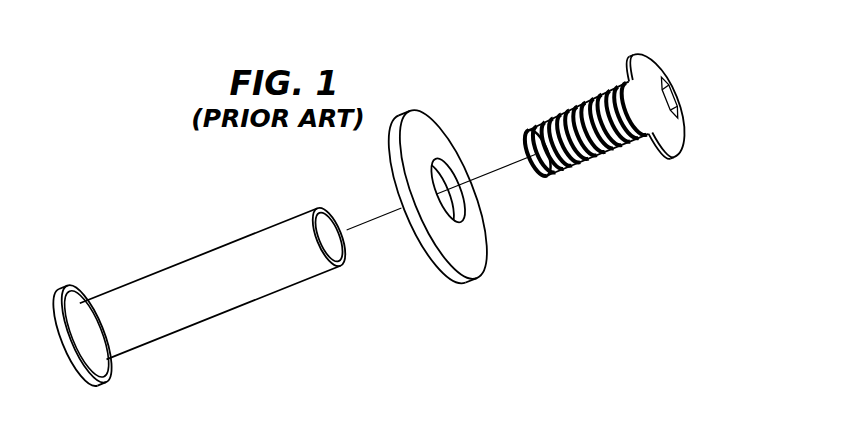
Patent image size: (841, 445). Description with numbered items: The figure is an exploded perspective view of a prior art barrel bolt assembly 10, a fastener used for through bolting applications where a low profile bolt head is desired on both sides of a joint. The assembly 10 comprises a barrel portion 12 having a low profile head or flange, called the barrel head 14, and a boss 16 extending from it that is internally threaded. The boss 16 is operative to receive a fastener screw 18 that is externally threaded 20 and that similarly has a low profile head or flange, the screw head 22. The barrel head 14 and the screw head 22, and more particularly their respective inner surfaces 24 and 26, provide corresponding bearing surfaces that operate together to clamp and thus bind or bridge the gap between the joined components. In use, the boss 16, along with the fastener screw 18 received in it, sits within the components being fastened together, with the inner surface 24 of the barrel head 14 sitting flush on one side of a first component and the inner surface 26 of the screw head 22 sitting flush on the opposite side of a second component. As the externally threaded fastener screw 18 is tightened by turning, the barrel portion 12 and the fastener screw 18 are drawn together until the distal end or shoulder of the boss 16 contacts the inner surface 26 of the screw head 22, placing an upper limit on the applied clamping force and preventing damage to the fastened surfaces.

The barrel bolt assembly 10 is at (487, 118).
The barrel portion 12 is at (197, 289).
The barrel head 14 is at (82, 306).
The boss 16 is at (242, 245).
The fastener screw 18 is at (607, 128).
The external threads 20 is at (590, 161).
The screw head 22 is at (658, 118).
The inner surface of barrel head 24 is at (81, 296).
The inner surface of screw head 26 is at (647, 148).